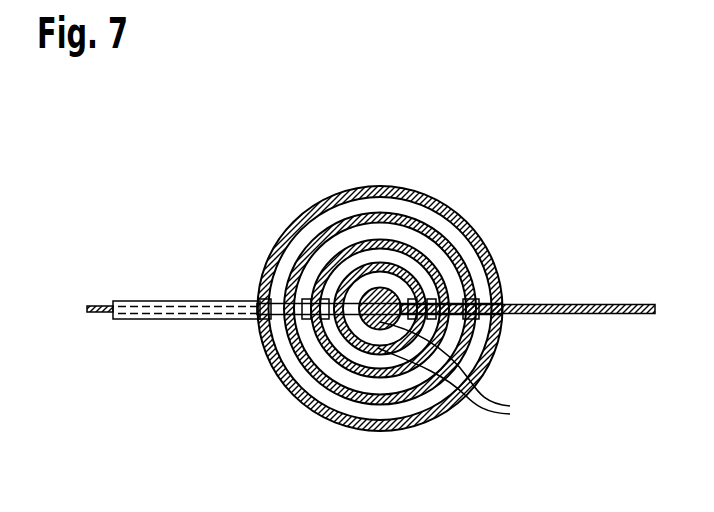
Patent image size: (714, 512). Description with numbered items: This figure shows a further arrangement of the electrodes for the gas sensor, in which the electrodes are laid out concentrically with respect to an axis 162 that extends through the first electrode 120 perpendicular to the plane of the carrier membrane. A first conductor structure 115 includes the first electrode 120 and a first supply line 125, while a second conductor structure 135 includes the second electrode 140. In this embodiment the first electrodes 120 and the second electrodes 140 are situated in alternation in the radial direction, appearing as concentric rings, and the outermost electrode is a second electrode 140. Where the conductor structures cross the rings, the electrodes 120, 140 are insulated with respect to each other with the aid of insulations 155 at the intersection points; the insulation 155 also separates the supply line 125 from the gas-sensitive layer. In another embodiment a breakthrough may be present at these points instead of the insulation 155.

The first conductor structure 115 is at (216, 188).
The first electrode 120 is at (397, 370).
The first supply line 125 is at (128, 310).
The second conductor structure 135 is at (577, 305).
The second electrode 140 is at (463, 373).
The insulation 155 is at (179, 300).
The axis 162 is at (397, 370).